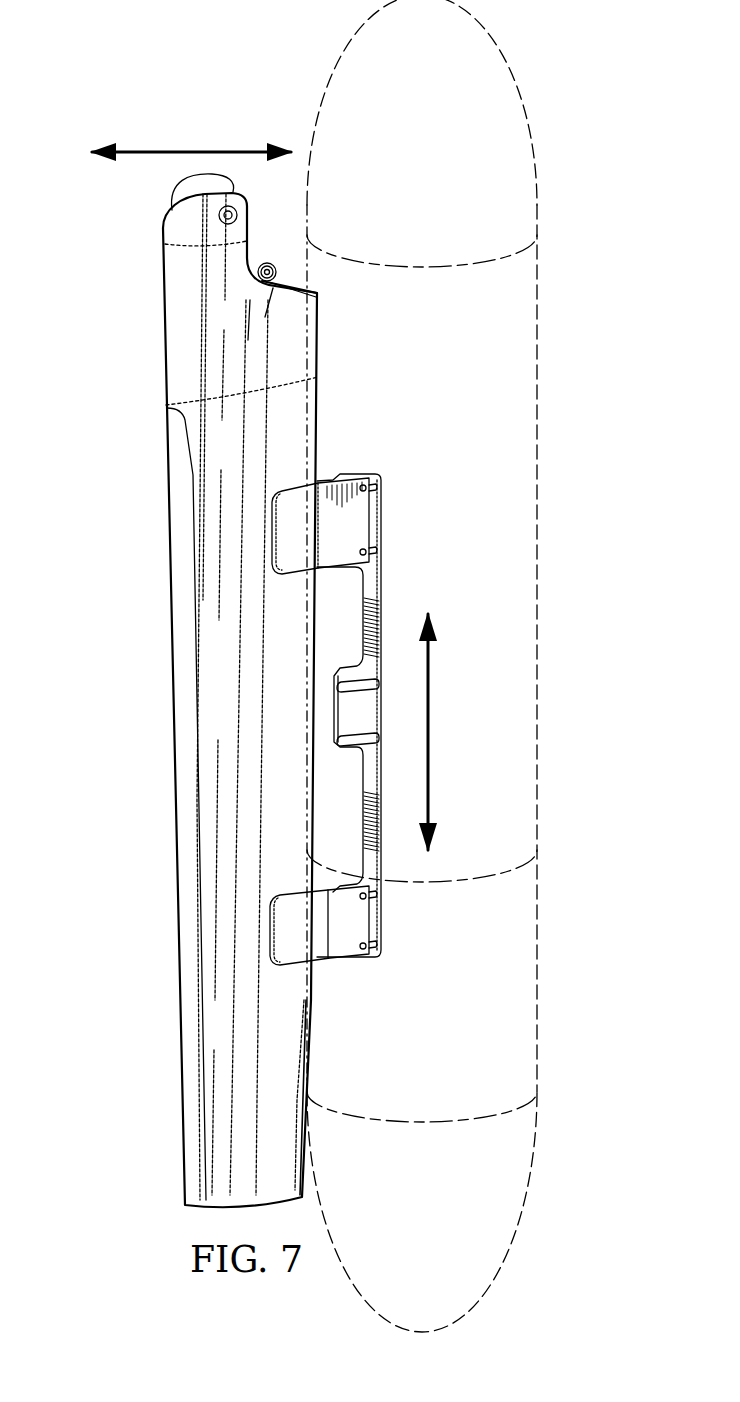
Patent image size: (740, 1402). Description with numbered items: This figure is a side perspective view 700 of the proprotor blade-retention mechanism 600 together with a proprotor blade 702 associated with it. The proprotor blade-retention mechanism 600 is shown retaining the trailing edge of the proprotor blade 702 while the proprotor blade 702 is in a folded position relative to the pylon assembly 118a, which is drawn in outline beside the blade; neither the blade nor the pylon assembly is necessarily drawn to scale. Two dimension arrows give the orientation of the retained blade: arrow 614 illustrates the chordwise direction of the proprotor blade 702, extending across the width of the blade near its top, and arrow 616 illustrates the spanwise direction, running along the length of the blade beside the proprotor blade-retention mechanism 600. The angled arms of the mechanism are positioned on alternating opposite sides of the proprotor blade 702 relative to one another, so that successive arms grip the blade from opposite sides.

The bracket and tank mounting arrangement 700 is at (104, 70).
The proprotor blade 702 is at (320, 360).
The proprotor blade-retention mechanism 600 is at (394, 588).
The arrow illustrating chordwise direction 614 is at (193, 150).
The arrow illustrating spanwise direction 616 is at (431, 733).
The pylon assembly 118a is at (540, 334).